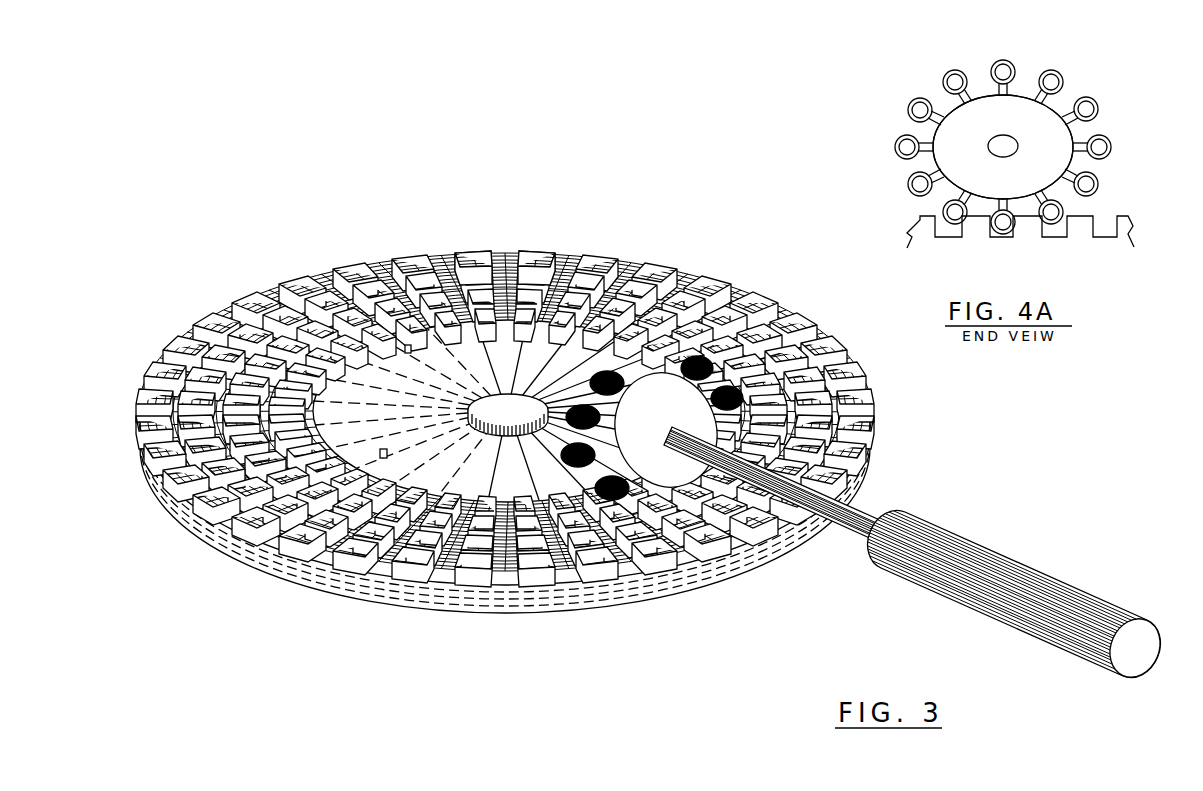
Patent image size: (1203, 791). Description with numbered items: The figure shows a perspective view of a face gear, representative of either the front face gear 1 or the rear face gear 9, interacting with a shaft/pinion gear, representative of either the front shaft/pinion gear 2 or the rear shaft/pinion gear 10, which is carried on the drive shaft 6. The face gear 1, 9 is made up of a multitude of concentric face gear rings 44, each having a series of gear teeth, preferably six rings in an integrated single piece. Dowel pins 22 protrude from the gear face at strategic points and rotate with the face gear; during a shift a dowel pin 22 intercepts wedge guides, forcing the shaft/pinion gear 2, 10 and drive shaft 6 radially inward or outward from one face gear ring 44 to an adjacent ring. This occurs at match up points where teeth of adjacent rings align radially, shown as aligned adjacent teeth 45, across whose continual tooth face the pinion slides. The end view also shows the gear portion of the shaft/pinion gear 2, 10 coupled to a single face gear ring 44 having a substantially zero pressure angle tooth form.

In FIG. 3, the front face gear 1 is at (625, 615).
In FIG. 3, the rear face gear 9 is at (505, 538).
In FIG. 3, the front shaft/pinion gear 2 is at (865, 500).
In FIG. 4A, the front shaft/pinion gear 2 is at (1107, 89).
In FIG. 3, the rear shaft/pinion gear 10 is at (804, 429).
In FIG. 4A, the rear shaft/pinion gear 10 is at (1062, 132).
In FIG. 3, the drive shaft 6 is at (986, 532).
In FIG. 3, the dowel pin 22 is at (385, 449).
In FIG. 3, the face gear ring 44 is at (534, 246).
In FIG. 4A, the face gear ring 44 is at (1101, 208).
In FIG. 3, the aligned adjacent teeth 45 is at (237, 285).